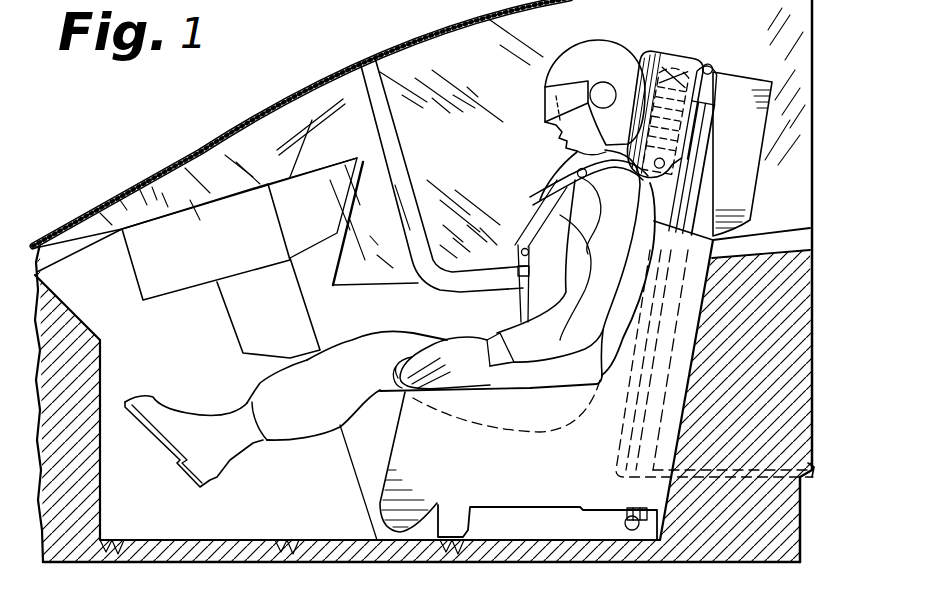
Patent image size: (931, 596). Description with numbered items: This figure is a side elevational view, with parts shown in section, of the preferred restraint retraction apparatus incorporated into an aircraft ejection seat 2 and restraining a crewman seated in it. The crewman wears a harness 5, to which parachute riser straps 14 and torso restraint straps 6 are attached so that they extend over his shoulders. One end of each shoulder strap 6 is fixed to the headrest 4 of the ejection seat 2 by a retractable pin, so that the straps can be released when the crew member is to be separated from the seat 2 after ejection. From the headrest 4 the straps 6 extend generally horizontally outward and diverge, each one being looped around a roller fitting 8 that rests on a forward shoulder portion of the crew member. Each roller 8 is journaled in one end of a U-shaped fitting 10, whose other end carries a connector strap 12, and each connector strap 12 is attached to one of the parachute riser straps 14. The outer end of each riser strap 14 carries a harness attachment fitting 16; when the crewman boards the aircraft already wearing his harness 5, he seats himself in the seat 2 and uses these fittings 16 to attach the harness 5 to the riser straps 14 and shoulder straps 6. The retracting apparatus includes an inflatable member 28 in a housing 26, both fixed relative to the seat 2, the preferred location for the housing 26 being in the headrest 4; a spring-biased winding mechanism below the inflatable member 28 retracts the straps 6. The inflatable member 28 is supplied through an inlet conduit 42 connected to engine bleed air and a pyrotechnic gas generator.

The ejection seat 2 is at (378, 472).
The headrest 4 is at (690, 56).
The harness 5 is at (520, 300).
The torso restraint strap 6 is at (580, 152).
The roller fitting 8 is at (577, 173).
The U-shaped fitting 10 is at (588, 226).
The connector strap 12 is at (548, 190).
The parachute riser strap 14 is at (594, 183).
The harness attachment fitting 16 is at (529, 268).
The housing 26 is at (666, 56).
The inflatable member 28 is at (705, 70).
The inlet conduit 42 is at (808, 478).